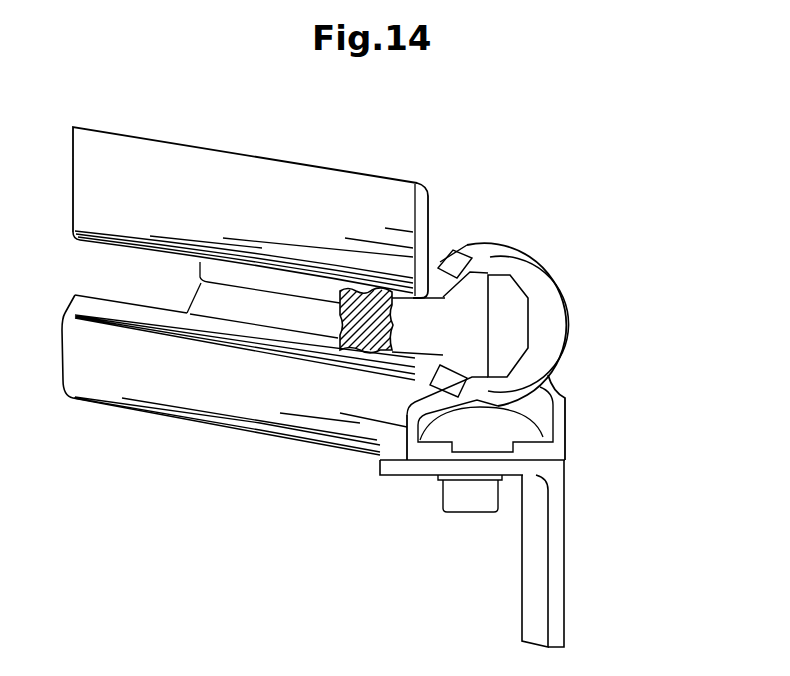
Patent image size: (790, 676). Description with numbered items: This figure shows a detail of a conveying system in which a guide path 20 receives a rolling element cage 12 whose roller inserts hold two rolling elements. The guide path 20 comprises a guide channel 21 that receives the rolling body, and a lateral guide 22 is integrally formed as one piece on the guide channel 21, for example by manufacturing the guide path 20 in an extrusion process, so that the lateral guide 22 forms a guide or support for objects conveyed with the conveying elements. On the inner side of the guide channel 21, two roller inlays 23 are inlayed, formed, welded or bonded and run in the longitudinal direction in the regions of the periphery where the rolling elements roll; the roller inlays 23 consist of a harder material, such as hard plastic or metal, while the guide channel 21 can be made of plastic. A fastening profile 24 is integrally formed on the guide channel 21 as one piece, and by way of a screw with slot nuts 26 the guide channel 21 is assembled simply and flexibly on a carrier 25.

The rolling element cage 12 is at (512, 311).
The guide path 20 is at (540, 337).
The guide channel 21 is at (560, 330).
The lateral guide 22 is at (428, 202).
The roller inlay 23 is at (450, 383).
The fastening profile 24 is at (550, 408).
The carrier 25 is at (556, 521).
The slot nut 26 is at (458, 497).